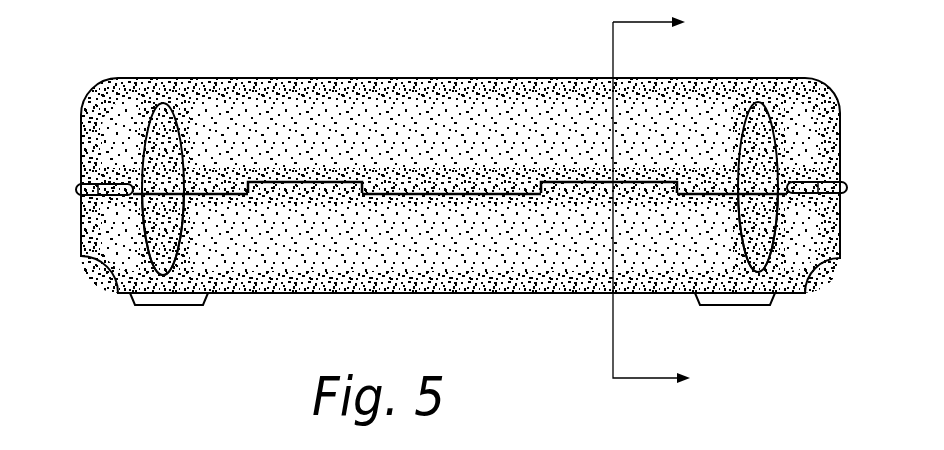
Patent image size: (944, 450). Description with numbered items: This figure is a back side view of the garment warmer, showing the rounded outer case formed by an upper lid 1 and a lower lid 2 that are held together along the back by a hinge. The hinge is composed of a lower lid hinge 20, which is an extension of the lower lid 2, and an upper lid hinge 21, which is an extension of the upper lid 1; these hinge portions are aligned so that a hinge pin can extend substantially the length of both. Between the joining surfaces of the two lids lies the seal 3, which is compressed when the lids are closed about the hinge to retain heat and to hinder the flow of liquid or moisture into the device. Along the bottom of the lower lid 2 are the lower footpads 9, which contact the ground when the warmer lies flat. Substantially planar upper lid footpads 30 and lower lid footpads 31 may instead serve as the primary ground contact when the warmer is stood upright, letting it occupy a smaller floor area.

The upper lid 1 is at (274, 100).
The lower lid 2 is at (267, 273).
The seal 3 is at (77, 189).
The lower footpads 9 is at (160, 352).
The lower lid hinge 20 is at (317, 182).
The upper lid hinge 21 is at (226, 183).
The upper lid footpads 30 is at (160, 106).
The lower lid footpads 31 is at (161, 245).